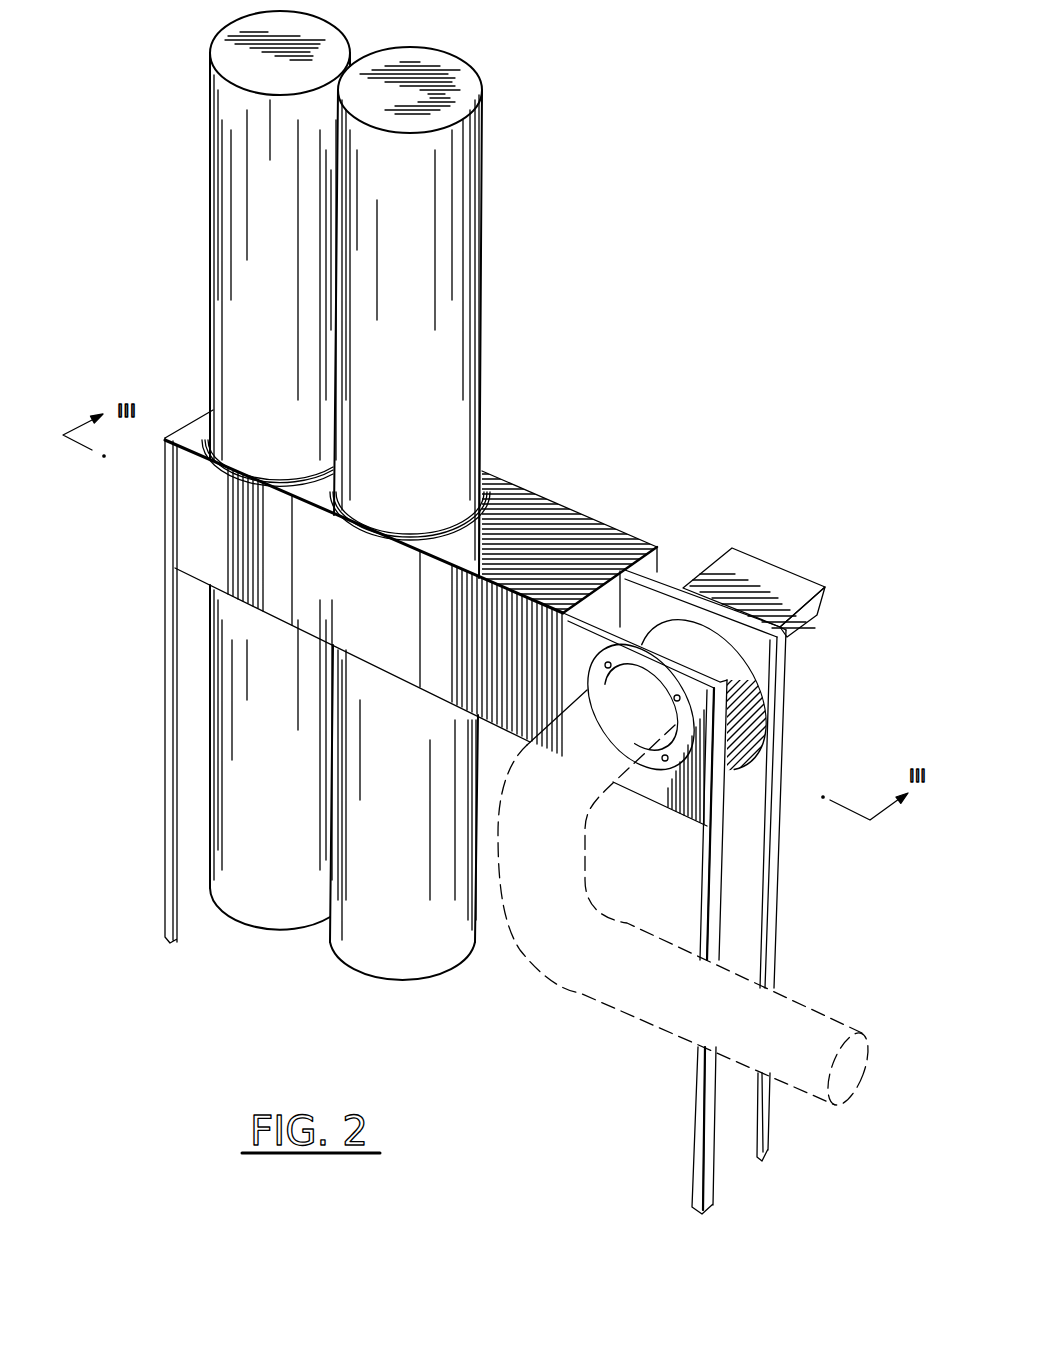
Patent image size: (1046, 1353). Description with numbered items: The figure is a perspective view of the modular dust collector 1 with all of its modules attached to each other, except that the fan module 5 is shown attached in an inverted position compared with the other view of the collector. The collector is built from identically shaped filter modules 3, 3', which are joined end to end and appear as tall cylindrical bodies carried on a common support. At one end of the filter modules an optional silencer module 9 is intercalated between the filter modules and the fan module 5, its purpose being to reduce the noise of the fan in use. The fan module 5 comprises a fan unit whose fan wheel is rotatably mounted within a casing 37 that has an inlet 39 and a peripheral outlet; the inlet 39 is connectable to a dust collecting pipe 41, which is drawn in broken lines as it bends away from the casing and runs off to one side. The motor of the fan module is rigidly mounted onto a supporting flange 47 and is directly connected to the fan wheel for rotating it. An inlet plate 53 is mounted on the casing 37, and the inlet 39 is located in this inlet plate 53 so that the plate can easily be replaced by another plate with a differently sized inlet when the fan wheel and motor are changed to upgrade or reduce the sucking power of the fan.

The modular dust collector 1 is at (512, 157).
The filter module 3 is at (436, 618).
The filter module 3' is at (183, 636).
The fan module 5 is at (686, 806).
The silencer module 9 is at (603, 507).
The casing 37 is at (760, 688).
The inlet 39 is at (608, 683).
The dust collecting pipe 41 is at (640, 990).
The supporting flange 47 is at (800, 593).
The inlet plate 53 is at (653, 763).